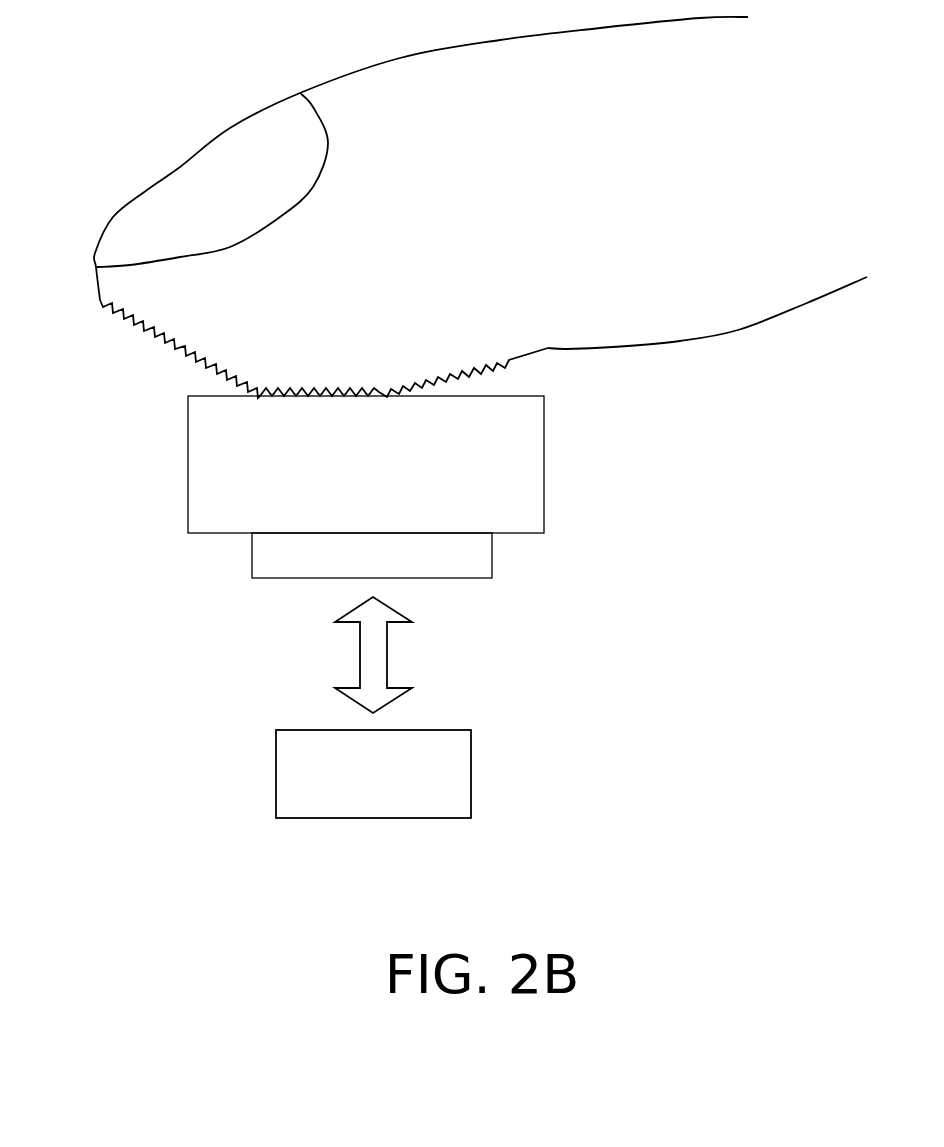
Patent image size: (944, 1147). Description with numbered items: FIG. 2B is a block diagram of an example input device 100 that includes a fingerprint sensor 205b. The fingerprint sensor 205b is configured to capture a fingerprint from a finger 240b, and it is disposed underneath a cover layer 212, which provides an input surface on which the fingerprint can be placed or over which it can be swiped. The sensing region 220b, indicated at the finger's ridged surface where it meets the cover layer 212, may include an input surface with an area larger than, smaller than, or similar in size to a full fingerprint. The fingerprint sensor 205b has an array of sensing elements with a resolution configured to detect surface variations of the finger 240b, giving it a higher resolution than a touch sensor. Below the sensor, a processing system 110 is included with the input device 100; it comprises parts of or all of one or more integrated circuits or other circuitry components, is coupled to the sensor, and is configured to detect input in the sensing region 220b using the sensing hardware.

The input device 100 is at (141, 90).
The sensing region 220b is at (148, 381).
The finger 240b is at (738, 330).
The cover layer 212 is at (544, 484).
The fingerprint sensor 205b is at (492, 565).
The processing system 110 is at (276, 782).